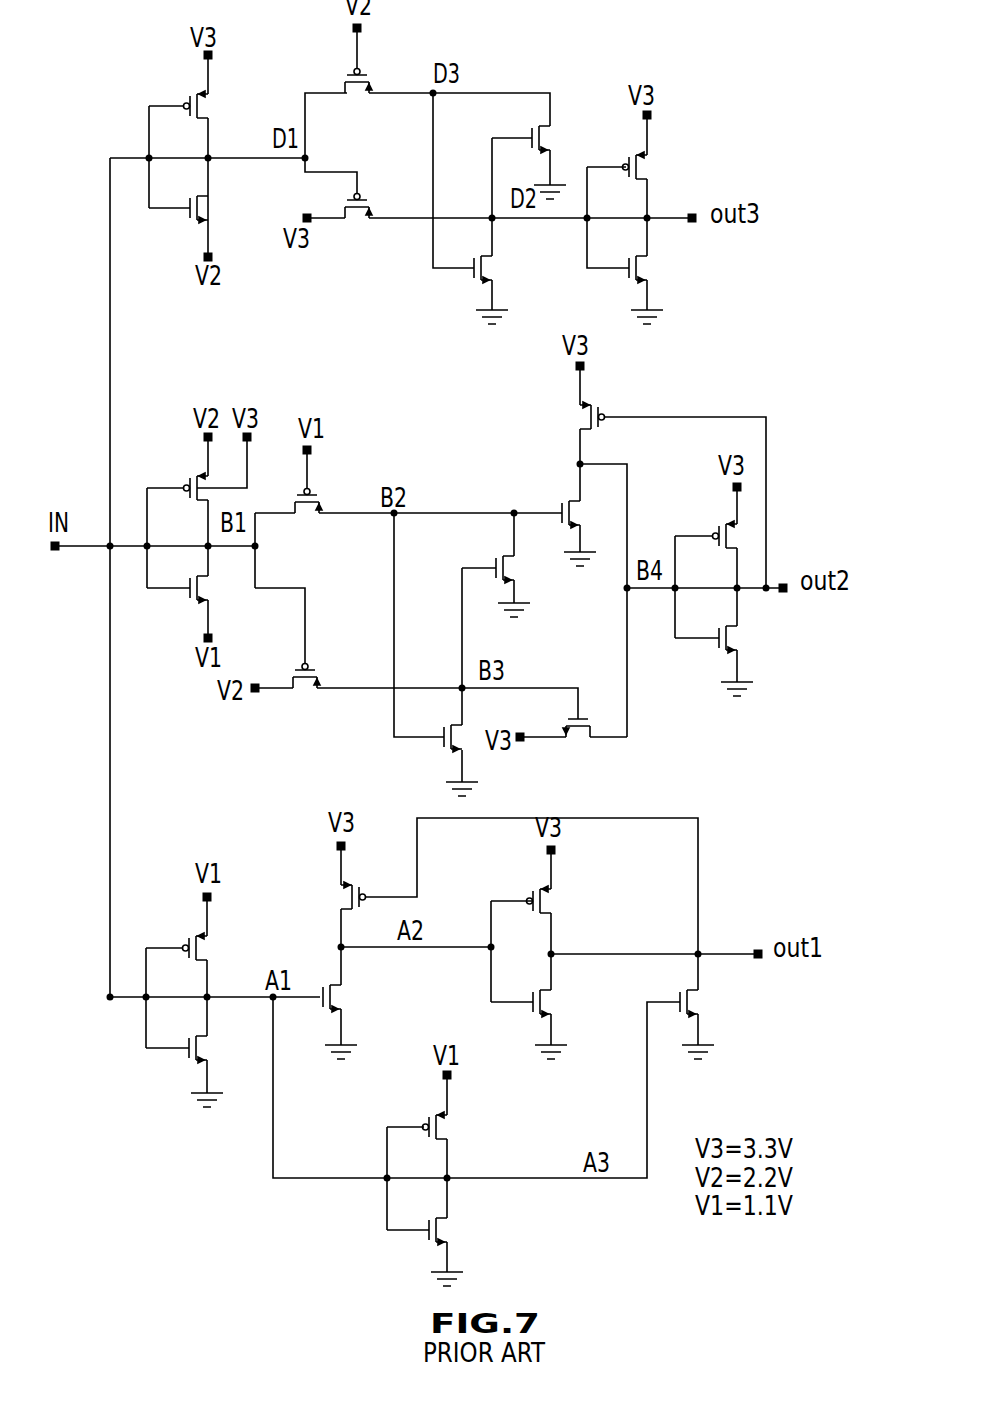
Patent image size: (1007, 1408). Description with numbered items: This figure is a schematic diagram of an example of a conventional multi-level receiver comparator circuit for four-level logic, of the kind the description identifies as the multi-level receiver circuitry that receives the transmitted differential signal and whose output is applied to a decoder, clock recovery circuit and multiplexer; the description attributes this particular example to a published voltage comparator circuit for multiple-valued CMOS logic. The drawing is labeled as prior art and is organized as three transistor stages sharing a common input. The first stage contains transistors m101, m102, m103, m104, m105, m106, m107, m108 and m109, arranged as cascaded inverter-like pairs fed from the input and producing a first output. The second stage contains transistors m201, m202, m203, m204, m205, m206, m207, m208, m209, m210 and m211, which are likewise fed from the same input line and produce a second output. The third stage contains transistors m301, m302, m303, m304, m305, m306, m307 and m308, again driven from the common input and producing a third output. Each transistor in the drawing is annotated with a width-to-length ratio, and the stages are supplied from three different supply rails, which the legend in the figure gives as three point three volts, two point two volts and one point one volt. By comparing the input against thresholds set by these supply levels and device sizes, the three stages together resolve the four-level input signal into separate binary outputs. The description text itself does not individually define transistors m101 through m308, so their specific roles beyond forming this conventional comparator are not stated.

The PMOS transistor m101 is at (160, 921).
The NMOS transistor m102 is at (153, 1072).
The PMOS transistor m103 is at (309, 885).
The NMOS transistor m104 is at (376, 1001).
The PMOS transistor m105 is at (589, 892).
The NMOS transistor m106 is at (586, 991).
The NMOS transistor m107 is at (728, 1002).
The PMOS transistor m108 is at (472, 1124).
The NMOS transistor m109 is at (487, 1226).
The PMOS transistor m201 is at (162, 459).
The NMOS transistor m202 is at (160, 612).
The PMOS transistor m203 is at (316, 529).
The PMOS transistor m204 is at (313, 706).
The NMOS transistor m205 is at (458, 549).
The NMOS transistor m206 is at (405, 763).
The NMOS transistor m207 is at (531, 489).
The PMOS transistor m208 is at (544, 414).
The PMOS transistor m209 is at (687, 511).
The NMOS transistor m210 is at (774, 637).
The NMOS transistor m211 is at (585, 761).
The PMOS transistor m301 is at (238, 89).
The NMOS transistor m302 is at (241, 203).
The PMOS transistor m303 is at (368, 108).
The PMOS transistor m304 is at (374, 236).
The NMOS transistor m305 is at (587, 128).
The NMOS transistor m306 is at (531, 271).
The PMOS transistor m307 is at (686, 159).
The NMOS transistor m308 is at (687, 269).